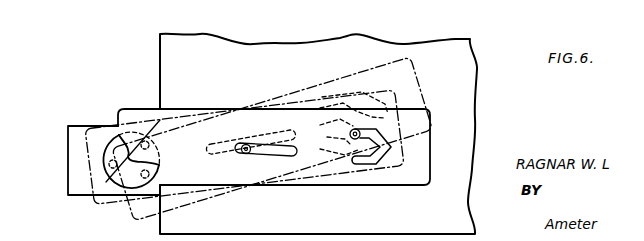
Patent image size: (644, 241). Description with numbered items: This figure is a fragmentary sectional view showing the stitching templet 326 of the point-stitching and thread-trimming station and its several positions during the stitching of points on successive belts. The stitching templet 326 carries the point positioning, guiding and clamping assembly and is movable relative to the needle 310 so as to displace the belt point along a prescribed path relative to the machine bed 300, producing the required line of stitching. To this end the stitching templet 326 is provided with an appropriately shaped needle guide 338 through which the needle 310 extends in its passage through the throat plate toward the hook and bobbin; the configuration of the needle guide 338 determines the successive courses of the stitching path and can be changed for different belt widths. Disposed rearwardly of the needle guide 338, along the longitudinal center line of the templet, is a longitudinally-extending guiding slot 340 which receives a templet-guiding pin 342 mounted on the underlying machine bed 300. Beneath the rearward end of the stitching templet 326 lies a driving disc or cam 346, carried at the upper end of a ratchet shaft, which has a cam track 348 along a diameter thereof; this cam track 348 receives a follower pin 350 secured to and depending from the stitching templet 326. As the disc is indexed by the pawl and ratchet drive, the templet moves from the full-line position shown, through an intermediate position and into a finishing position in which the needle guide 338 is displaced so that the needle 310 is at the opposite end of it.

The machine bed 300 is at (471, 36).
The stitching templet 326 is at (136, 107).
The driving disc or cam 346 is at (104, 153).
The follower pin 350 is at (154, 146).
The cam track 348 is at (106, 180).
The guiding slot 340 is at (284, 151).
The templet-guiding pin 342 is at (244, 152).
The needle 310 is at (350, 132).
The needle guide 338 is at (358, 164).